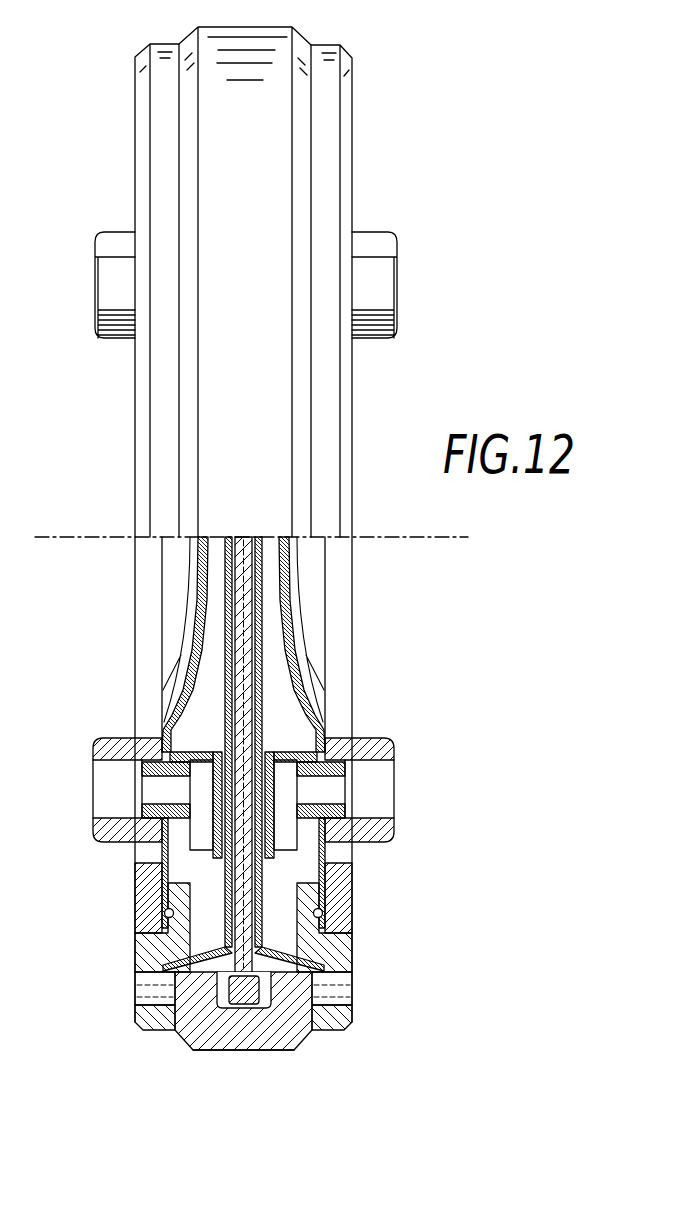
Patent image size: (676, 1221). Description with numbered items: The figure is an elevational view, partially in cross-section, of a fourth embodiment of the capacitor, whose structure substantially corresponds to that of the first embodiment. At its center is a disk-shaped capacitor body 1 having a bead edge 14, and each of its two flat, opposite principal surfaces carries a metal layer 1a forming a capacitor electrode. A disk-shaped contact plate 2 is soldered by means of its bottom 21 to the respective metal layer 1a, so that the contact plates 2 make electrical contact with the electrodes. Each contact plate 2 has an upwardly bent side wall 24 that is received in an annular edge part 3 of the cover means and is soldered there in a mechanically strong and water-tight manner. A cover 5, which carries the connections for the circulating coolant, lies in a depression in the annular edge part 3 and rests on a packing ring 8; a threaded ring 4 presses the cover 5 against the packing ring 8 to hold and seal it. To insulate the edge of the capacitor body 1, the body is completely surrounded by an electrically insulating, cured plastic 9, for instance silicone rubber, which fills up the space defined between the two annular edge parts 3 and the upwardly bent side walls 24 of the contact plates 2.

The capacitor body 1 is at (348, 949).
The metal layer 1a is at (223, 1042).
The contact plate 2 is at (227, 908).
The bottom 21 is at (243, 873).
The annular edge part 3 is at (172, 225).
The threaded ring 4 is at (349, 885).
The cover 5 is at (187, 673).
The packing ring 8 is at (313, 916).
The cured plastic 9 is at (258, 208).
The bead edge 14 is at (307, 1043).
The upwardly bent side wall 24 is at (197, 1040).